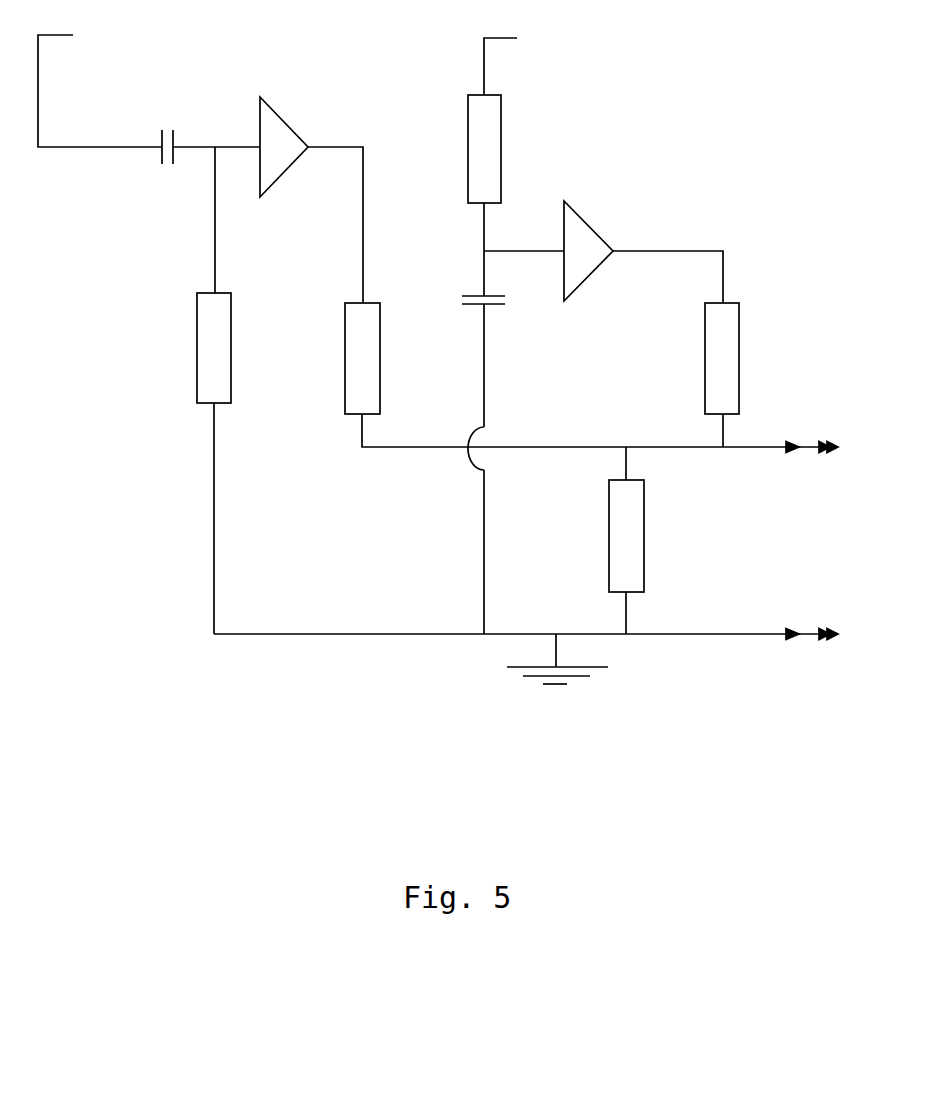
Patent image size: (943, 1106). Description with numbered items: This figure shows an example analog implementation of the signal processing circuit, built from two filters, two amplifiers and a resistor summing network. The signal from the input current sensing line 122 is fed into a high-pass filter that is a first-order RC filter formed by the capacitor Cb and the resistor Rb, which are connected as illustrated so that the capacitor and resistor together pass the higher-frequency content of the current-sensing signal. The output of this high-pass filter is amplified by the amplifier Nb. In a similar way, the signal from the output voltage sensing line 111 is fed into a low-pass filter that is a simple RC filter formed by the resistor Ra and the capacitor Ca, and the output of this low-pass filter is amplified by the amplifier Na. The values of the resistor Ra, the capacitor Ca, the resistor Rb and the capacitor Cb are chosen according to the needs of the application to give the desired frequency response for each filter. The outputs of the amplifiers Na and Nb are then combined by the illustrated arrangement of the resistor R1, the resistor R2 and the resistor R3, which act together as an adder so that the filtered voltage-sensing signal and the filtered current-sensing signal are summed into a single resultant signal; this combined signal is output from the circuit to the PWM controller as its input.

The input current sensing line 122 is at (226, 85).
The output voltage sensing line 111 is at (658, 60).
The capacitor Cb is at (186, 139).
The amplifier Nb is at (311, 200).
The resistor Rb is at (191, 390).
The resistor R1 is at (546, 375).
The resistor Ra is at (516, 195).
The capacitor Ca is at (491, 465).
The amplifier Na is at (643, 252).
The resistor R2 is at (741, 375).
The resistor R3 is at (646, 540).